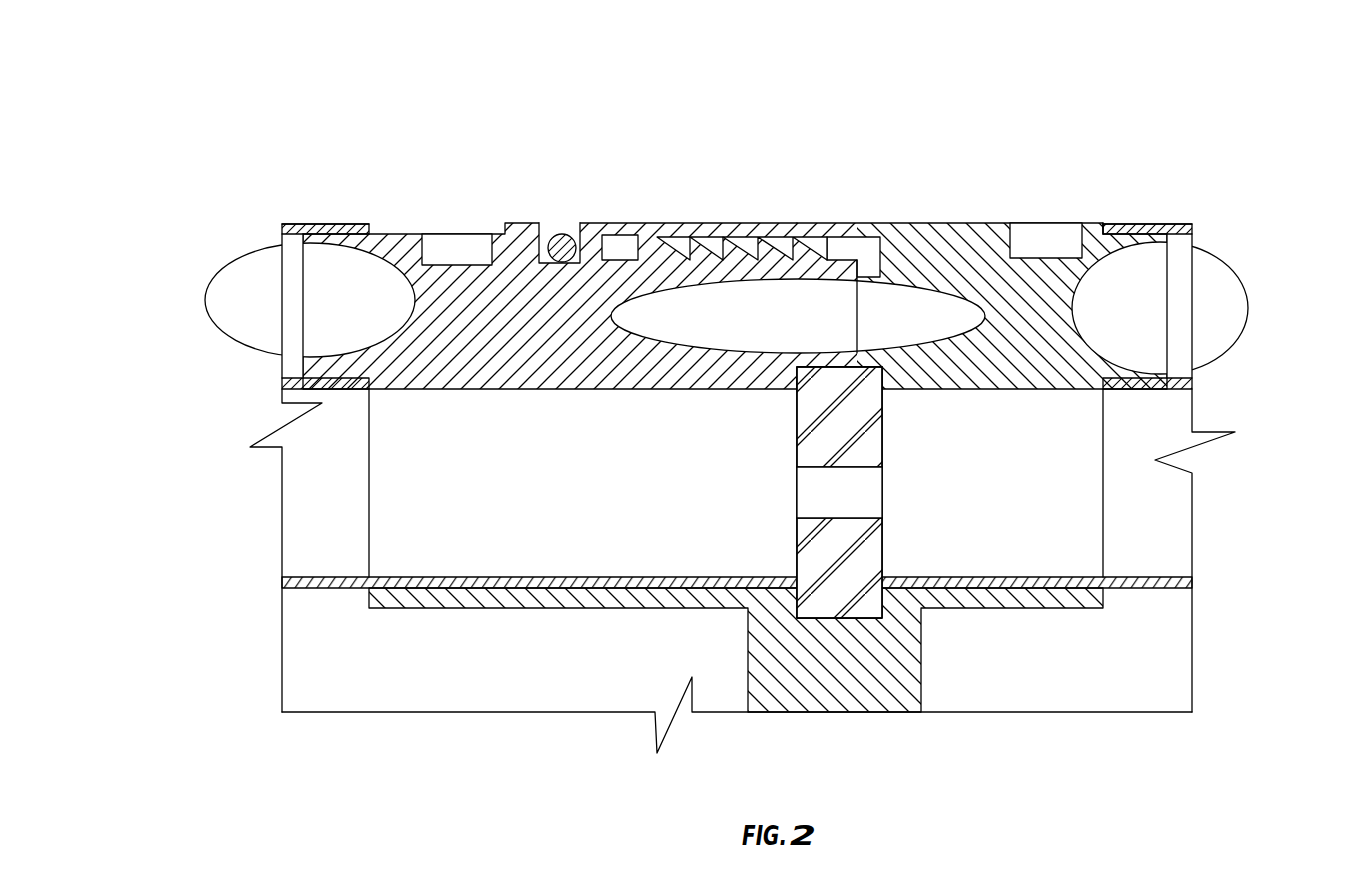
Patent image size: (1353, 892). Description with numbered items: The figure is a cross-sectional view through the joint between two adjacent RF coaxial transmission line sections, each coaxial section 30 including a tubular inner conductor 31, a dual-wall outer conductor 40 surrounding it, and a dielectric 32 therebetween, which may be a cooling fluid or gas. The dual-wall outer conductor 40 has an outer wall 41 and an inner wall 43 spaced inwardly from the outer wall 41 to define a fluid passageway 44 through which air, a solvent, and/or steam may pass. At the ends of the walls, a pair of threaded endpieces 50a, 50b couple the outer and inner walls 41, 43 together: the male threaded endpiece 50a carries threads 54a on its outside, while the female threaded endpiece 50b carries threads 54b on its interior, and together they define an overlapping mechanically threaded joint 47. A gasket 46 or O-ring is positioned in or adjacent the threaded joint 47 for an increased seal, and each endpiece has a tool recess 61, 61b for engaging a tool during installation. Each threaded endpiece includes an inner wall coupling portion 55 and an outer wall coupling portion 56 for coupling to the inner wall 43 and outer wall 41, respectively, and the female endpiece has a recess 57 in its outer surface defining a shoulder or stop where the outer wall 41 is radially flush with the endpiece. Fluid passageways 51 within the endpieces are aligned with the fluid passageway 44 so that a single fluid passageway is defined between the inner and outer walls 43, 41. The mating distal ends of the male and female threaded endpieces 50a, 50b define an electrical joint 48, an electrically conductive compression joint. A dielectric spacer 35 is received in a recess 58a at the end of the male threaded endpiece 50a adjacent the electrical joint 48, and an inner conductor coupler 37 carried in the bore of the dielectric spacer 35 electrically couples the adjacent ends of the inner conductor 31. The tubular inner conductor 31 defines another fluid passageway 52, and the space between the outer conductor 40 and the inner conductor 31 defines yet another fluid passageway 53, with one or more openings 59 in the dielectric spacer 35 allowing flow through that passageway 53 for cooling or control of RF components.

The coaxial section 30 is at (410, 153).
The inner conductor 31 is at (292, 581).
The dielectric 32 is at (292, 474).
The dielectric spacer 35 is at (305, 362).
The inner conductor coupler 37 is at (768, 698).
The dual-wall outer conductor 40 is at (270, 268).
The outer wall 41 is at (318, 224).
The inner wall 43 is at (283, 381).
The fluid passageway 44 is at (292, 256).
The gasket 46 is at (562, 236).
The overlapping mechanically threaded joint 47 is at (757, 257).
The electrical joint 48 is at (883, 360).
The male threaded endpiece 50a is at (483, 393).
The female threaded endpiece 50b is at (1015, 393).
The fluid passageways 51 is at (322, 310).
The fluid passageway 52 is at (418, 637).
The fluid passageway 53 is at (292, 527).
The male threads 54a is at (677, 257).
The female threads 54b is at (718, 236).
The threaded endpiece inner wall coupling portion 55 is at (1192, 372).
The threaded endpiece outer wall coupling portion 56 is at (283, 239).
The recess 57 is at (1103, 222).
The recess 58a is at (795, 378).
The openings 59 is at (815, 492).
The tool recess 61 is at (452, 247).
The tool recess 61b is at (1050, 240).